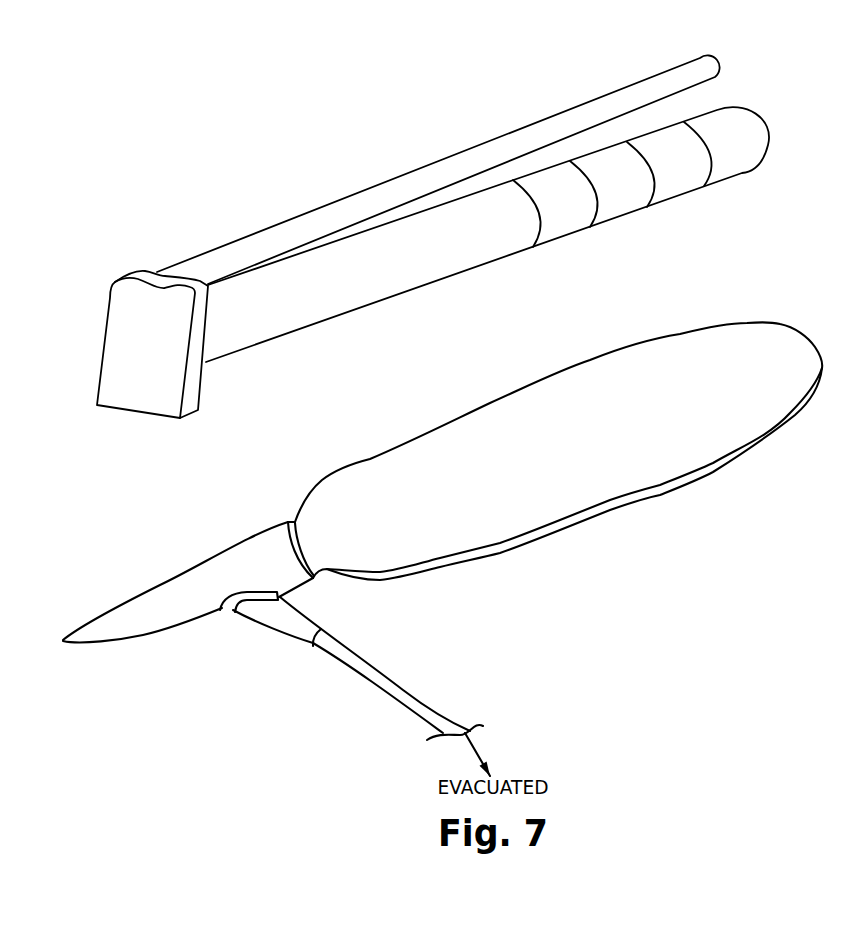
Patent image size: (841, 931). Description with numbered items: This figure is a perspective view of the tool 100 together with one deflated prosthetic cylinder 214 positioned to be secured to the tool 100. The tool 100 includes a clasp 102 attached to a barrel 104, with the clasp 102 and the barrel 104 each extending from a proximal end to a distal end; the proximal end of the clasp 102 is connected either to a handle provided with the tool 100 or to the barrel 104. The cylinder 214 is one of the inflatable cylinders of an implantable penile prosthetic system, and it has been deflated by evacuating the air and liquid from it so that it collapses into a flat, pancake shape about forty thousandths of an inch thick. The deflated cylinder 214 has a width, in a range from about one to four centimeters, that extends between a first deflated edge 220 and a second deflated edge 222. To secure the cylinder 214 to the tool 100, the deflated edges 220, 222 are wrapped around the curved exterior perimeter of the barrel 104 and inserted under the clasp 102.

The tool 100 is at (423, 148).
The clasp 102 is at (520, 147).
The barrel 104 is at (455, 243).
The prosthetic cylinder 214 is at (558, 448).
The first deflated edge 220 is at (613, 350).
The second deflated edge 222 is at (560, 530).